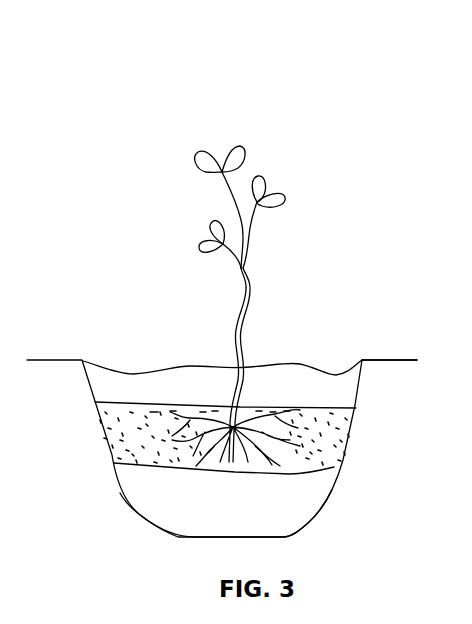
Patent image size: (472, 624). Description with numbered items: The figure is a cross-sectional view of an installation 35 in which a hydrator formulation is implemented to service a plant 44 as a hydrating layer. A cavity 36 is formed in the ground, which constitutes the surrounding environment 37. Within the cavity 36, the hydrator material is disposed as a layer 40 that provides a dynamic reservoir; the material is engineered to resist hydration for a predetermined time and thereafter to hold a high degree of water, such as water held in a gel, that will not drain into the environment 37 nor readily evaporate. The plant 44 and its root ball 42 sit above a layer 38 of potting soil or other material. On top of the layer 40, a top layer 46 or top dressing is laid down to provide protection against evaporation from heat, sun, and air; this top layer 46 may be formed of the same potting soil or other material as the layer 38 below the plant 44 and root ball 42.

The installation 35 is at (293, 117).
The cavity 36 is at (117, 486).
The environment 37 is at (387, 361).
The layer 38 is at (307, 502).
The layer 40 is at (338, 435).
The root ball 42 is at (207, 470).
The plant 44 is at (249, 308).
The top layer 46 is at (352, 388).